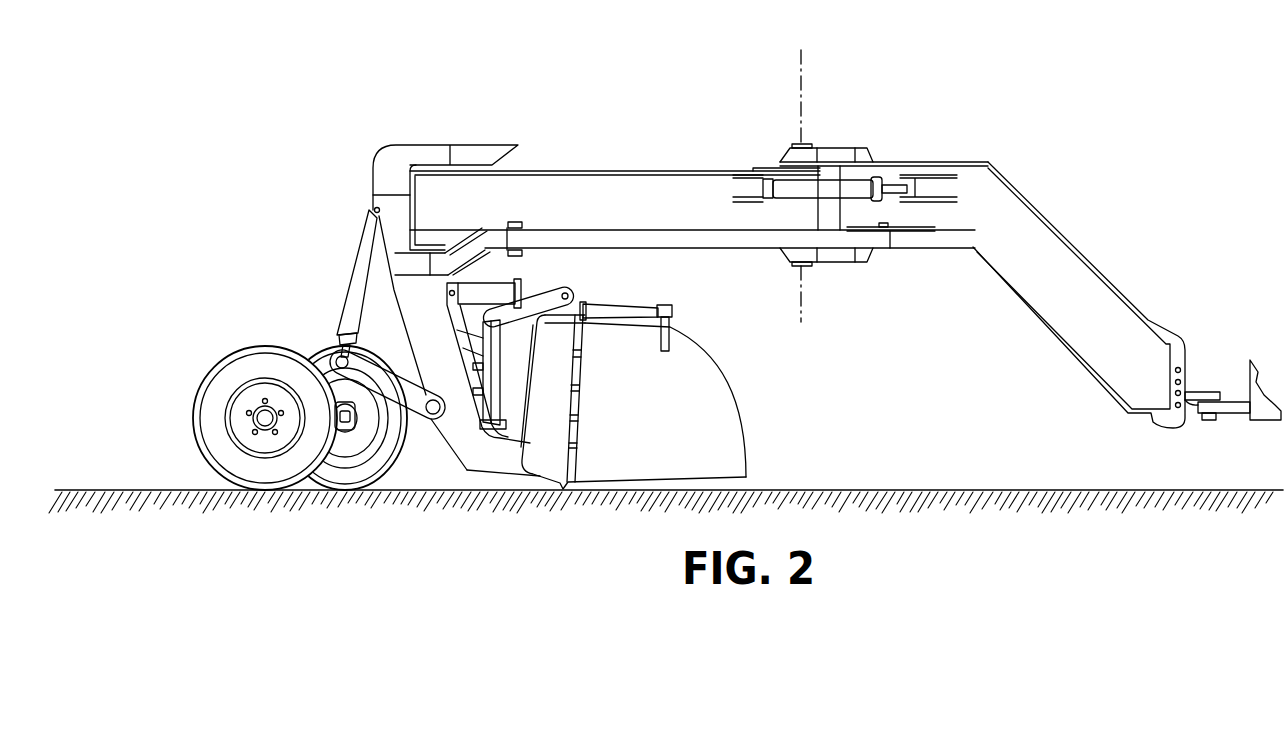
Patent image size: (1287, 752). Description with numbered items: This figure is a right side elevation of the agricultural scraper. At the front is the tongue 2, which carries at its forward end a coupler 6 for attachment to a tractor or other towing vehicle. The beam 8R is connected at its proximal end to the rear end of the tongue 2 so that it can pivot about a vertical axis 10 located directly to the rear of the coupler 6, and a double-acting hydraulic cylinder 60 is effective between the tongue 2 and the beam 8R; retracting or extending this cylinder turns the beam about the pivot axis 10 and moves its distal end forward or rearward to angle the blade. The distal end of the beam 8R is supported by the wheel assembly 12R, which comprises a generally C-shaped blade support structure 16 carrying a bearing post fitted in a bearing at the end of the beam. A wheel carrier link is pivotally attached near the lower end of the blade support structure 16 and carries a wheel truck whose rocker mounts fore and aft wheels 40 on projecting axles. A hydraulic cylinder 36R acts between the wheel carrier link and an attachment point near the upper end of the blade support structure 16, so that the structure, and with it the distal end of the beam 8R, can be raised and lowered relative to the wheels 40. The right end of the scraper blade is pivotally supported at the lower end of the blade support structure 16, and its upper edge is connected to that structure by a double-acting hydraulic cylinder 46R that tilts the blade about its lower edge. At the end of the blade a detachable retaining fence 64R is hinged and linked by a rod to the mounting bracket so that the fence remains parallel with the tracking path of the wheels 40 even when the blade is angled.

The vertical axis 10 is at (800, 95).
The wheel assembly 12R is at (276, 313).
The wheel 40 is at (196, 416).
The hydraulic cylinder 36R is at (362, 240).
The blade support structure 16 is at (467, 445).
The double-acting hydraulic cylinder 46R is at (498, 270).
The retaining fence 64R is at (730, 440).
The beam 8R is at (632, 185).
The double-acting hydraulic cylinder 60 is at (856, 182).
The tongue 2 is at (1088, 262).
The coupler 6 is at (1206, 393).